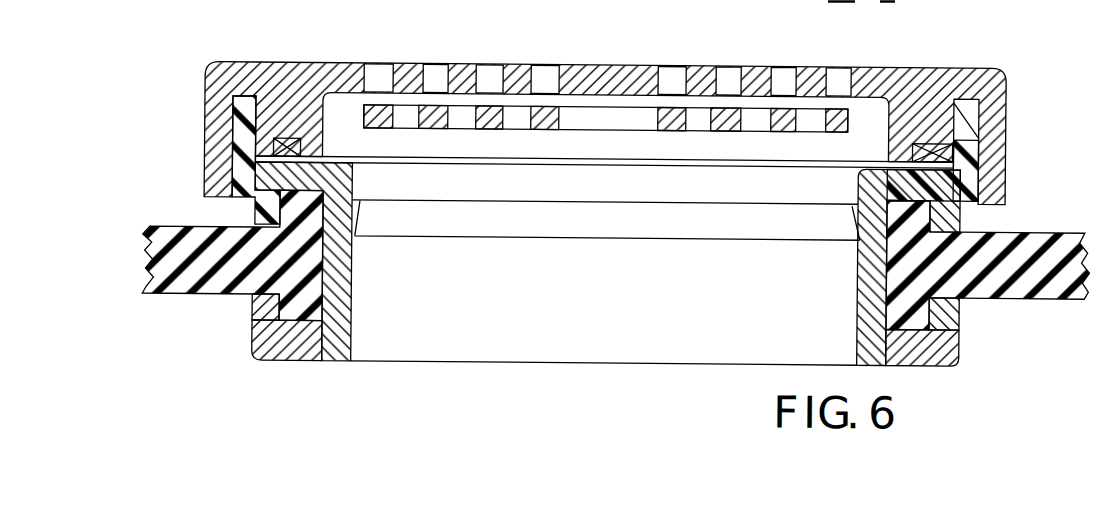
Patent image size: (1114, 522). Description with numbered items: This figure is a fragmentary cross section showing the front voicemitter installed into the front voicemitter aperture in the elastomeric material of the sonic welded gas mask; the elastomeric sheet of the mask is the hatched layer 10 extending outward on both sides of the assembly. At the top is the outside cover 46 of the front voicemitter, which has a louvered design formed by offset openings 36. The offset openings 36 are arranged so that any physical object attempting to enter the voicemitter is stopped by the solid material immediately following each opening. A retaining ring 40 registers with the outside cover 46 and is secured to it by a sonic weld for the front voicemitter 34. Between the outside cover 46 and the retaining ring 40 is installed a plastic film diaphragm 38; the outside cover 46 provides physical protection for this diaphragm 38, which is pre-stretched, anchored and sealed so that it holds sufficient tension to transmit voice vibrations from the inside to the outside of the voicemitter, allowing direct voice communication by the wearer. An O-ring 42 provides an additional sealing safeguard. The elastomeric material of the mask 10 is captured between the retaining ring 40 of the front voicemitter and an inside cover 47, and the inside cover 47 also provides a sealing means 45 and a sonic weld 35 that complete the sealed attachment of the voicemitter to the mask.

The plate 10 is at (1048, 232).
The sonic weld for front voicemitter 34 is at (232, 178).
The sonic weld 35 is at (317, 346).
The offset openings 36 is at (400, 118).
The plastic film diaphragm in front voicemitter 38 is at (795, 160).
The retaining ring 40 is at (937, 300).
The O-ring 42 is at (956, 140).
The sealing means 45 is at (256, 302).
The outside cover of front voicemitter 46 is at (960, 68).
The inside cover 47 is at (252, 351).